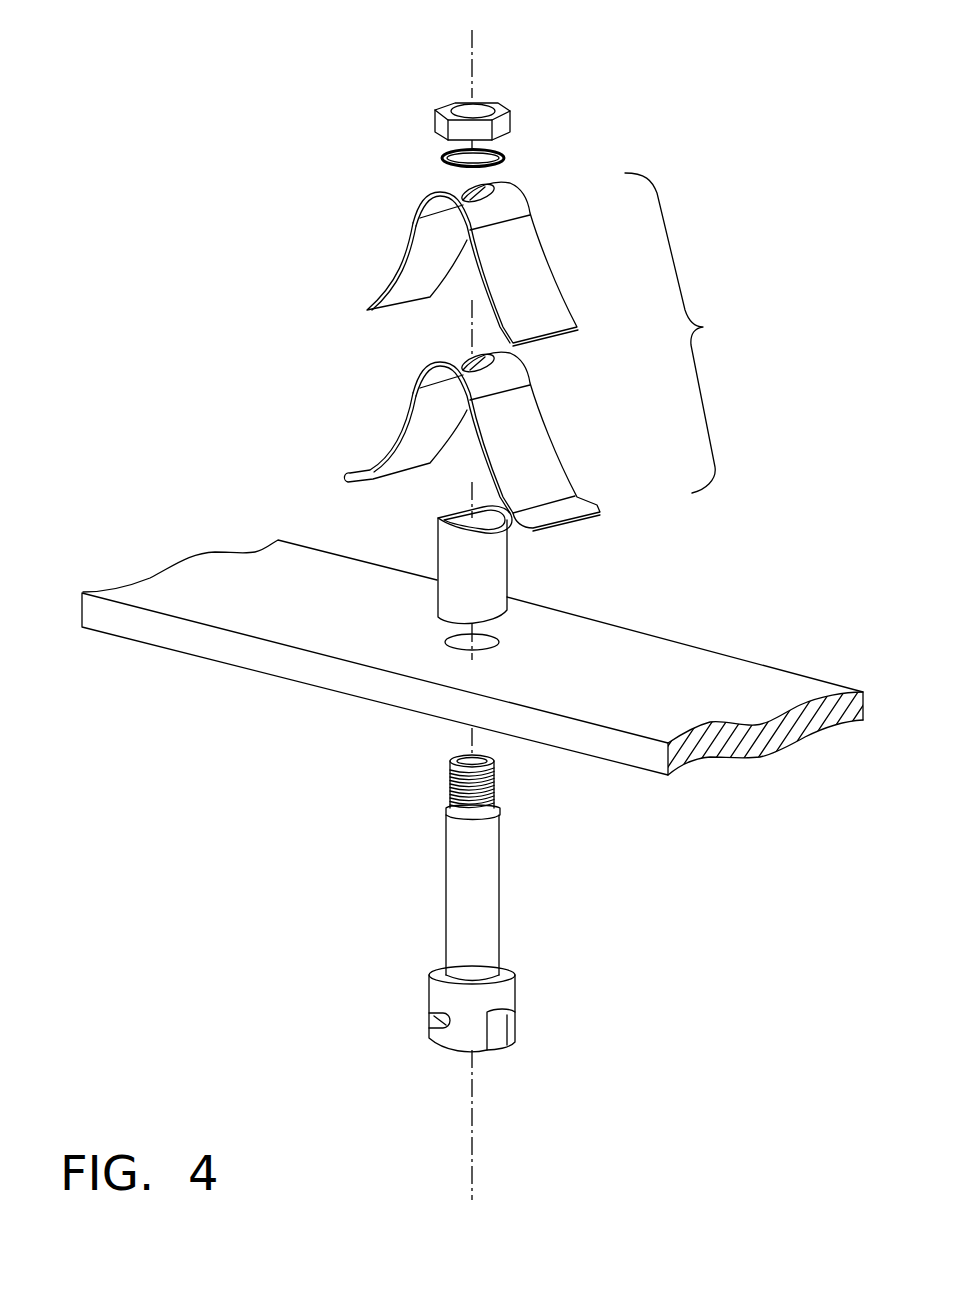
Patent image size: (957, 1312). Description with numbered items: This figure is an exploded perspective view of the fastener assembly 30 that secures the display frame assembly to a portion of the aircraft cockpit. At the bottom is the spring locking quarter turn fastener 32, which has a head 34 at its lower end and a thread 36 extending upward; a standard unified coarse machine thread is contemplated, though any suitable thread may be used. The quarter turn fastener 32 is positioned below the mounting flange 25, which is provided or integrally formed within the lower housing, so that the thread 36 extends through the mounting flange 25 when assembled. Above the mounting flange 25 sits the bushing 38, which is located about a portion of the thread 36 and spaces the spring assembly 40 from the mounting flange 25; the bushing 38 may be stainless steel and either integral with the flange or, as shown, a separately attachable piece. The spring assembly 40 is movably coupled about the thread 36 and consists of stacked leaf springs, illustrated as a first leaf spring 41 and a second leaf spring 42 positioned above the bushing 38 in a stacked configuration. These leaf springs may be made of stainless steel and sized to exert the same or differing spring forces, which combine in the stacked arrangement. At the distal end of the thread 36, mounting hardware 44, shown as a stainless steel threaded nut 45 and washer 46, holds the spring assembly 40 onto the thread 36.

The fastener assembly 30 is at (754, 72).
The mounting hardware 44 is at (554, 102).
The threaded nut 45 is at (437, 117).
The washer 46 is at (440, 157).
The spring assembly 40 is at (705, 328).
The second leaf spring 42 is at (521, 288).
The first leaf spring 41 is at (519, 437).
The bushing 38 is at (487, 574).
The mounting flange 25 is at (717, 678).
The spring locking quarter turn fastener 32 is at (537, 907).
The thread 36 is at (450, 788).
The head 34 is at (488, 994).